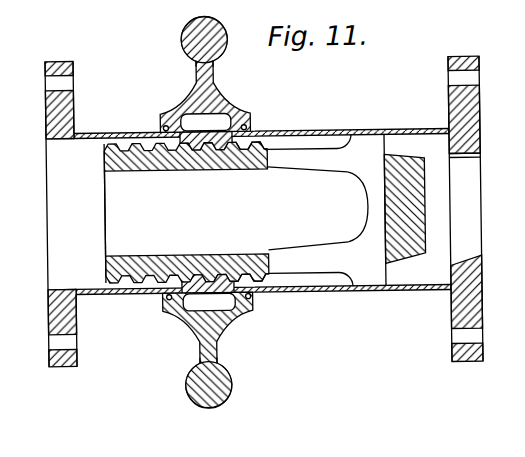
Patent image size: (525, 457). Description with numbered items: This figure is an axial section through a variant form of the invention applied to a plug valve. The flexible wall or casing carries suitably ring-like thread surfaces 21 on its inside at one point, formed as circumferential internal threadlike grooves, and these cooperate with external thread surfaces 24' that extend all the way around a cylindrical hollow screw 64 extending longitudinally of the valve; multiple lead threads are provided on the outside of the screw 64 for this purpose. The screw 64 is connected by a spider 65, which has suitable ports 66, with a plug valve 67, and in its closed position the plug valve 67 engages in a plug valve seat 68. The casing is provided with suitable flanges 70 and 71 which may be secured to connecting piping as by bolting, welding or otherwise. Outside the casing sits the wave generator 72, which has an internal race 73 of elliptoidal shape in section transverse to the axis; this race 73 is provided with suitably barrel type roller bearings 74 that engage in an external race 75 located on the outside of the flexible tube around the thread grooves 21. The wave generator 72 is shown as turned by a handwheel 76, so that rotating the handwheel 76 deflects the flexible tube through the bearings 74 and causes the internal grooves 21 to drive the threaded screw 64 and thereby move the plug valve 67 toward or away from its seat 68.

The ring-like thread surfaces 21 is at (223, 150).
The external thread surfaces 24' is at (81, 214).
The cylindrical hollow screw 64 is at (162, 170).
The spider 65 is at (318, 164).
The ports 66 is at (366, 168).
The plug valve 67 is at (432, 134).
The plug valve seat 68 is at (469, 163).
The flange 70 is at (62, 59).
The flange 71 is at (468, 81).
The wave generator 72 is at (198, 74).
The internal race 73 is at (200, 114).
The barrel type roller bearings 74 is at (186, 127).
The external race 75 is at (184, 148).
The handwheel 76 is at (186, 35).